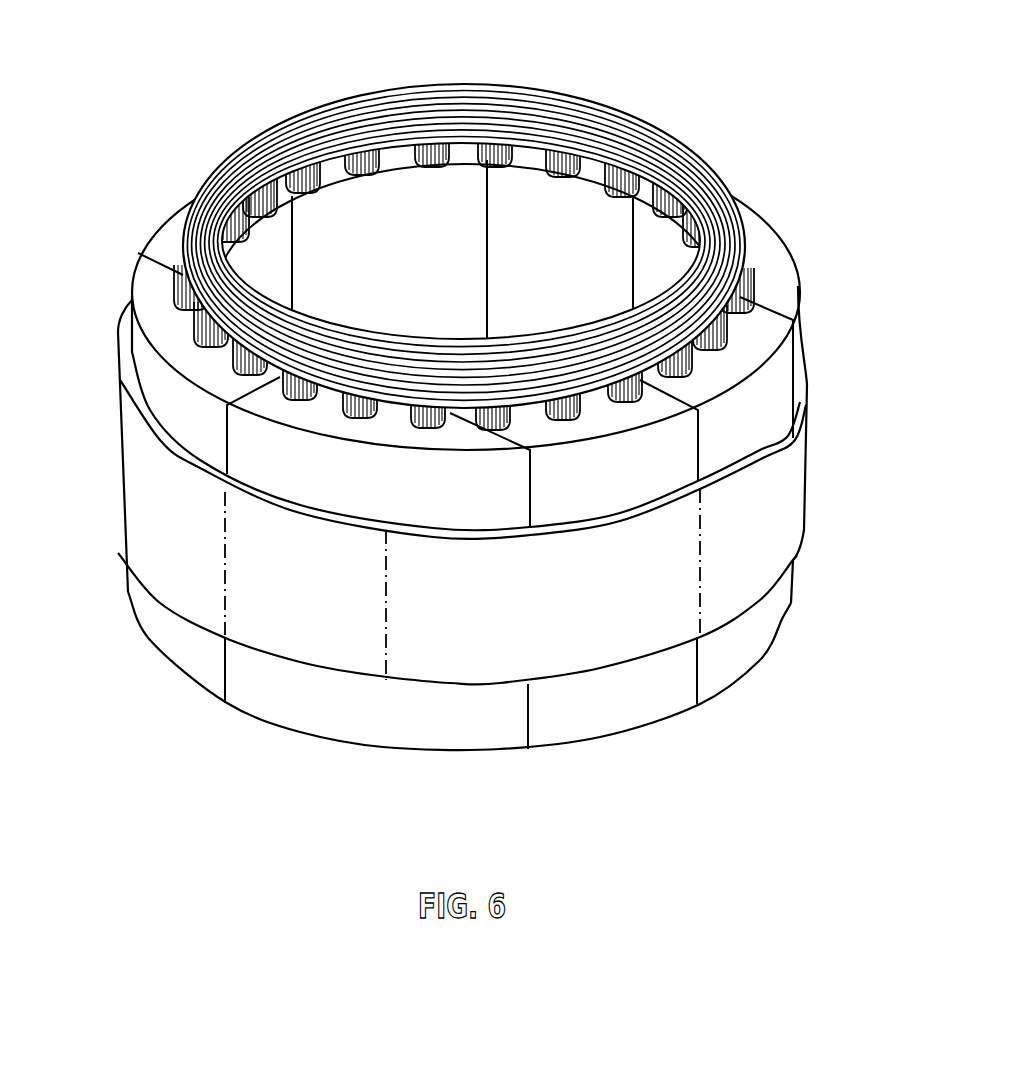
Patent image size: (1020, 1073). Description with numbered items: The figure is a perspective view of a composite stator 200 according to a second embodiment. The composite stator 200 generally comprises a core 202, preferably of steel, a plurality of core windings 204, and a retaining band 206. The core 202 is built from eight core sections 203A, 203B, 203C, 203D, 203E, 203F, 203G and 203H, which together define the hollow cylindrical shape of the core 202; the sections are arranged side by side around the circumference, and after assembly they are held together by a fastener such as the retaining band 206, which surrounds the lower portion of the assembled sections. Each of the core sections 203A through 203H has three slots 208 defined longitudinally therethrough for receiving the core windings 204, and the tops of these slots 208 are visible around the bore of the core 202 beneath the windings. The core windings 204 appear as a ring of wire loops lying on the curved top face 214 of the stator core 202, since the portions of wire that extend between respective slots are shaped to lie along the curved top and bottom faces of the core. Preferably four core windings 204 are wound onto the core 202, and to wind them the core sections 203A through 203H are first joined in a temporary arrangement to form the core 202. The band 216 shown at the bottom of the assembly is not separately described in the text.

The composite stator 200 is at (731, 87).
The core 202 is at (793, 253).
The core section 203A is at (410, 235).
The core section 203B is at (573, 235).
The core section 203C is at (650, 248).
The core section 203D is at (768, 428).
The core section 203E is at (636, 490).
The core section 203F is at (402, 498).
The core section 203G is at (208, 428).
The core section 203H is at (274, 247).
The core windings 204 is at (360, 97).
The retaining band 206 is at (569, 618).
The slots 208 is at (188, 347).
The top face 214 is at (313, 416).
The bottom ring 216 is at (776, 648).